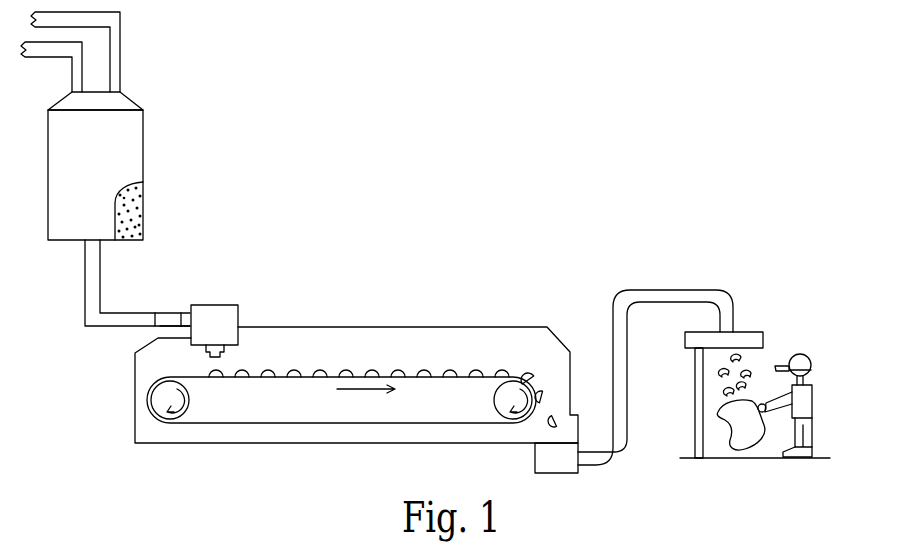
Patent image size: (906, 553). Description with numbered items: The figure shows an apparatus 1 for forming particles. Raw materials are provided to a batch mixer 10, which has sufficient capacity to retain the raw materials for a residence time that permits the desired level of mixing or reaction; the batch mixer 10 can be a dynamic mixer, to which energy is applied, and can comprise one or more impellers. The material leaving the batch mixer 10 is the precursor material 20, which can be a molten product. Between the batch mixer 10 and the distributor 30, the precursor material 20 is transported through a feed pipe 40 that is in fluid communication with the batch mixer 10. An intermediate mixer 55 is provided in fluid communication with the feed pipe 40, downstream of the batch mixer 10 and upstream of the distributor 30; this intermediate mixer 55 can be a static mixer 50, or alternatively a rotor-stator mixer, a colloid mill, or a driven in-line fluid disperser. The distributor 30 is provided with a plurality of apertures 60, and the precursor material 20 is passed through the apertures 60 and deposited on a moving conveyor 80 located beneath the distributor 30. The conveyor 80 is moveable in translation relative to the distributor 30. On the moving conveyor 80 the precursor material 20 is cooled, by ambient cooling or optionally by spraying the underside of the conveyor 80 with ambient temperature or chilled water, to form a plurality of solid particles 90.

The apparatus 1 is at (372, 227).
The batch mixer 10 is at (125, 175).
The precursor material 20 is at (143, 202).
The distributor 30 is at (223, 321).
The feed pipe 40 is at (137, 318).
The static mixer 50 is at (166, 318).
The intermediate mixer 55 is at (167, 327).
The apertures 60 is at (218, 357).
The conveyor 80 is at (213, 378).
The solid particles 90 is at (321, 377).